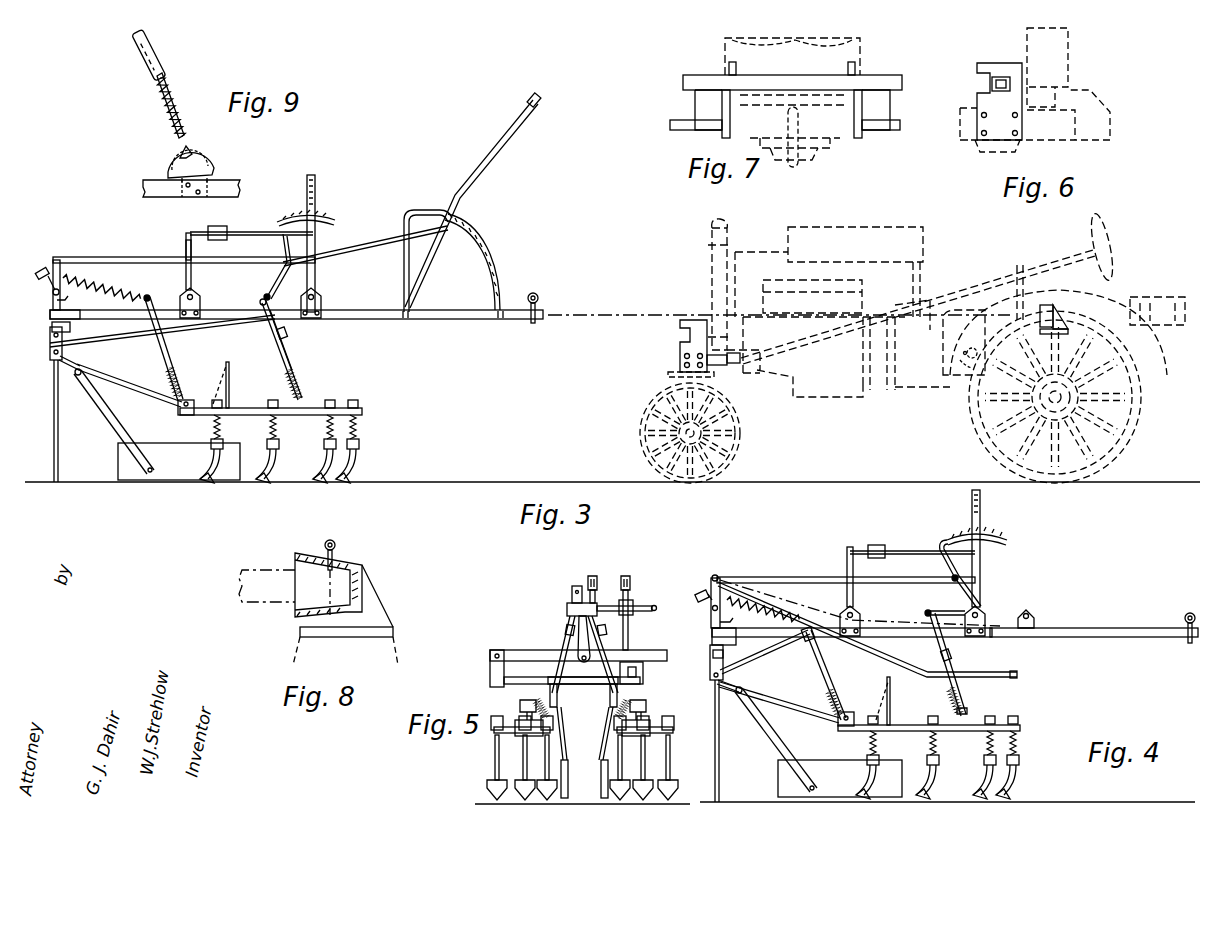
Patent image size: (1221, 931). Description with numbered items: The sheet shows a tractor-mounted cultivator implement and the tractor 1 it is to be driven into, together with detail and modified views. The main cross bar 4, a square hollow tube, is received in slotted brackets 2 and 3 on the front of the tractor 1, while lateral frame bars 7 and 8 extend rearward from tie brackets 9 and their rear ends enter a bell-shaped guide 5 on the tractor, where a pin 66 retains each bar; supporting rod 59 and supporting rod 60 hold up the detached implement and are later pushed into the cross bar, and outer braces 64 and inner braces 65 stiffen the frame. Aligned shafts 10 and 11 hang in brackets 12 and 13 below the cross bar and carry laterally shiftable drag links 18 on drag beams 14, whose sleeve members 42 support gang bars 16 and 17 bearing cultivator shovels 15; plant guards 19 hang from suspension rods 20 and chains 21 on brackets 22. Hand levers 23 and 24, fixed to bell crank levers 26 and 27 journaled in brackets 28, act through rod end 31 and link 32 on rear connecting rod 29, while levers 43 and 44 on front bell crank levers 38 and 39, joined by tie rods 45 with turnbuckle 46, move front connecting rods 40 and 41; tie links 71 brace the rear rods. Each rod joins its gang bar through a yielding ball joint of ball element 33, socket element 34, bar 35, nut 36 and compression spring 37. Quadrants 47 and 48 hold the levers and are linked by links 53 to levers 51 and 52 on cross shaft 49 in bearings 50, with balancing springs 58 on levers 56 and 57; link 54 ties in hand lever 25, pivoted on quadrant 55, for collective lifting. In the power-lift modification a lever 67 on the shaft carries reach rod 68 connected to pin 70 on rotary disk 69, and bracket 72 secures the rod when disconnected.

In FIG. 3, the tractor 1 is at (846, 356).
In FIG. 7, the tractor 1 is at (796, 56).
In FIG. 6, the tractor 1 is at (1092, 60).
In FIG. 8, the tractor 1 is at (330, 663).
In FIG. 3, the bracket 2 is at (690, 318).
In FIG. 7, the bracket 2 is at (858, 70).
In FIG. 6, the bracket 2 is at (998, 63).
In FIG. 7, the bracket 3 is at (728, 70).
In FIG. 3, the main cross bar 4 is at (68, 328).
In FIG. 7, the main cross bar 4 is at (898, 76).
In FIG. 6, the main cross bar 4 is at (992, 84).
In FIG. 5, the main cross bar 4 is at (652, 650).
In FIG. 4, the main cross bar 4 is at (724, 654).
In FIG. 3, the bell-shaped guide 5 is at (1055, 305).
In FIG. 8, the bell-shaped guide 5 is at (372, 592).
In FIG. 3, the lateral frame bar 7 is at (445, 322).
In FIG. 8, the lateral frame bar 7 is at (245, 604).
In FIG. 4, the lateral frame bar 8 is at (1093, 638).
In FIG. 3, the tie bracket 9 is at (52, 316).
In FIG. 4, the tie bracket 9 is at (712, 640).
In FIG. 7, the shaft 10 is at (888, 130).
In FIG. 7, the shaft 11 is at (688, 128).
In FIG. 5, the shaft 11 is at (512, 685).
In FIG. 7, the bracket 12 is at (718, 108).
In FIG. 5, the bracket 12 is at (644, 676).
In FIG. 4, the bracket 12 is at (710, 672).
In FIG. 3, the bracket 13 is at (50, 352).
In FIG. 5, the bracket 13 is at (490, 673).
In FIG. 3, the drag beam 14 is at (130, 389).
In FIG. 4, the drag beam 14 is at (790, 700).
In FIG. 3, the cultivator shovel 15 is at (278, 479).
In FIG. 5, the cultivator shovel 15 is at (514, 785).
In FIG. 4, the cultivator shovel 15 is at (968, 796).
In FIG. 9, the gang bar 16 is at (143, 186).
In FIG. 3, the gang bar 17 is at (238, 416).
In FIG. 4, the gang bar 17 is at (958, 731).
In FIG. 3, the drag link 18 is at (76, 363).
In FIG. 5, the drag link 18 is at (576, 685).
In FIG. 4, the drag link 18 is at (745, 686).
In FIG. 3, the plant guard 19 is at (160, 448).
In FIG. 5, the plant guard 19 is at (568, 778).
In FIG. 4, the plant guard 19 is at (822, 760).
In FIG. 3, the suspension rod 20 is at (108, 425).
In FIG. 5, the suspension rod 20 is at (566, 733).
In FIG. 4, the suspension rod 20 is at (772, 730).
In FIG. 3, the chain 21 is at (216, 386).
In FIG. 4, the chain 21 is at (880, 700).
In FIG. 3, the bracket 22 is at (230, 372).
In FIG. 4, the bracket 22 is at (891, 693).
In FIG. 3, the hand lever 23 is at (316, 190).
In FIG. 4, the hand lever 24 is at (982, 512).
In FIG. 3, the hand lever 25 is at (503, 130).
In FIG. 3, the bell crank lever 26 is at (268, 295).
In FIG. 4, the bell crank lever 27 is at (985, 606).
In FIG. 3, the bracket 28 is at (200, 300).
In FIG. 4, the bracket 28 is at (860, 620).
In FIG. 3, the rear connecting rod 29 is at (292, 372).
In FIG. 9, the rear connecting rod 29 is at (148, 43).
In FIG. 3, the rod end 31 is at (270, 325).
In FIG. 4, the rod end 31 is at (938, 640).
In FIG. 3, the link 32 is at (262, 300).
In FIG. 4, the link 32 is at (927, 613).
In FIG. 9, the ball element 33 is at (214, 166).
In FIG. 9, the socket element 34 is at (173, 155).
In FIG. 9, the bar 35 is at (160, 66).
In FIG. 9, the nut 36 is at (195, 150).
In FIG. 4, the nut 36 is at (952, 690).
In FIG. 3, the compression spring 37 is at (300, 392).
In FIG. 9, the compression spring 37 is at (166, 100).
In FIG. 4, the compression spring 37 is at (970, 707).
In FIG. 3, the bell crank lever 38 is at (186, 286).
In FIG. 4, the bell crank lever 39 is at (840, 616).
In FIG. 3, the front connecting rod 40 is at (166, 356).
In FIG. 4, the front connecting rod 41 is at (828, 670).
In FIG. 3, the sleeve member 42 is at (188, 400).
In FIG. 5, the sleeve member 42 is at (528, 712).
In FIG. 4, the sleeve member 42 is at (850, 714).
In FIG. 3, the lever 43 is at (186, 250).
In FIG. 4, the lever 44 is at (847, 568).
In FIG. 3, the tie rod 45 is at (262, 231).
In FIG. 4, the tie rod 45 is at (915, 550).
In FIG. 3, the turnbuckle 46 is at (218, 226).
In FIG. 4, the turnbuckle 46 is at (876, 545).
In FIG. 3, the quadrant 47 is at (282, 220).
In FIG. 4, the quadrant 48 is at (952, 536).
In FIG. 5, the cross shaft 49 is at (650, 606).
In FIG. 3, the bearing 50 is at (66, 300).
In FIG. 4, the bearing 50 is at (730, 620).
In FIG. 3, the lever 51 is at (56, 264).
In FIG. 5, the lever 52 is at (596, 576).
In FIG. 3, the link 53 is at (150, 257).
In FIG. 4, the link 53 is at (772, 577).
In FIG. 3, the link 54 is at (380, 240).
In FIG. 3, the quadrant 55 is at (422, 211).
In FIG. 3, the lever 56 is at (53, 292).
In FIG. 5, the lever 57 is at (572, 598).
In FIG. 4, the lever 57 is at (708, 606).
In FIG. 3, the balancing spring 58 is at (100, 282).
In FIG. 4, the balancing spring 58 is at (778, 608).
In FIG. 3, the supporting rod 59 is at (54, 420).
In FIG. 4, the supporting rod 60 is at (716, 728).
In FIG. 3, the outer brace 64 is at (185, 330).
In FIG. 4, the inner brace 65 is at (784, 652).
In FIG. 3, the pin 66 is at (538, 295).
In FIG. 8, the pin 66 is at (336, 543).
In FIG. 4, the pin 66 is at (1190, 613).
In FIG. 5, the lever 67 is at (631, 576).
In FIG. 4, the lever 67 is at (715, 576).
In FIG. 4, the reach rod 68 is at (868, 648).
In FIG. 3, the rotary disk 69 is at (960, 362).
In FIG. 3, the pin 70 is at (966, 352).
In FIG. 3, the tie link 71 is at (288, 334).
In FIG. 4, the tie link 71 is at (952, 654).
In FIG. 4, the bracket 72 is at (1036, 620).